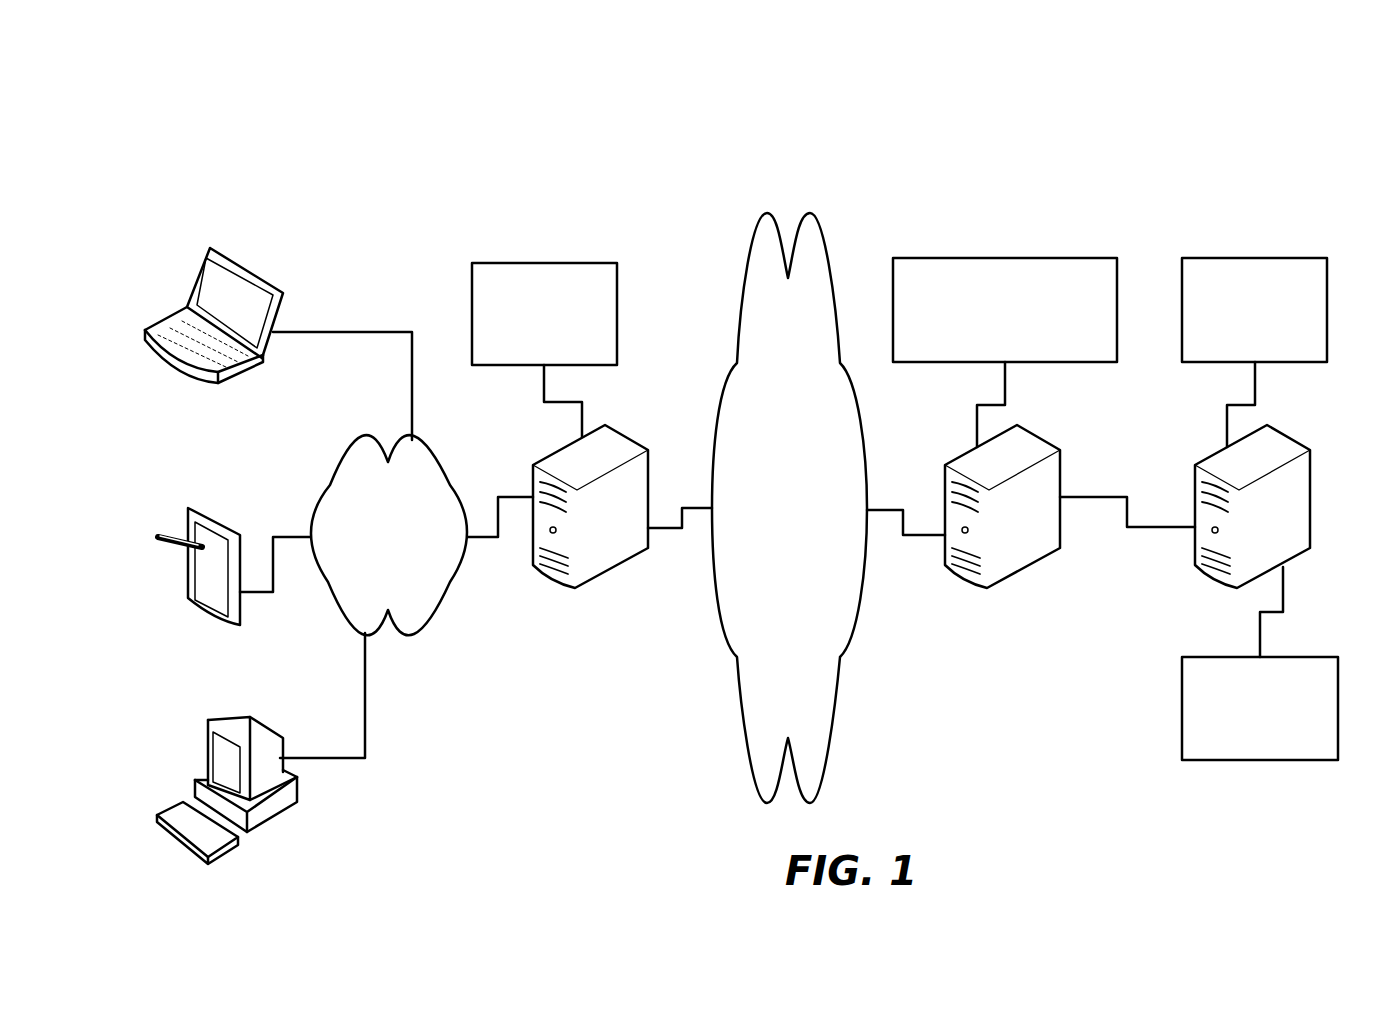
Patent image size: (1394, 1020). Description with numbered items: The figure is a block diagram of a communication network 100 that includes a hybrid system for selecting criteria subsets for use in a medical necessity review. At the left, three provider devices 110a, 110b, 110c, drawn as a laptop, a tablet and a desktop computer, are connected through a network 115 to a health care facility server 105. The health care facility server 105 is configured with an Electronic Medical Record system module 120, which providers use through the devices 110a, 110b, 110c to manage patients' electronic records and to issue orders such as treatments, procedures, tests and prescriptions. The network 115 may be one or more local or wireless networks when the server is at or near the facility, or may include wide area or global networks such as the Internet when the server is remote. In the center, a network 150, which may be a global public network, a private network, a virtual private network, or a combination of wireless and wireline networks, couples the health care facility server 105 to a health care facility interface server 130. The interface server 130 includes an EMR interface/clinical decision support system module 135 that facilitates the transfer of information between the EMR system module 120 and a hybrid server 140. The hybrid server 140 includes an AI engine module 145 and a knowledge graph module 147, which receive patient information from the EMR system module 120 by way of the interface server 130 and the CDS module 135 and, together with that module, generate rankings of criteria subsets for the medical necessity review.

The communication network 100 is at (322, 91).
The health care facility server 105 is at (555, 450).
The device 110a is at (200, 262).
The device 110b is at (198, 507).
The device 110c is at (221, 716).
The network 115 is at (389, 535).
The Electronic Medical Record (EMR) system module 120 is at (544, 314).
The health care facility interface server 130 is at (1032, 430).
The EMR interface/clinical decision support (CDS) system module 135 is at (1005, 310).
The hybrid server 140 is at (1282, 430).
The AI engine module 145 is at (1254, 310).
The knowledge graph module 147 is at (1260, 708).
The network 150 is at (789, 508).